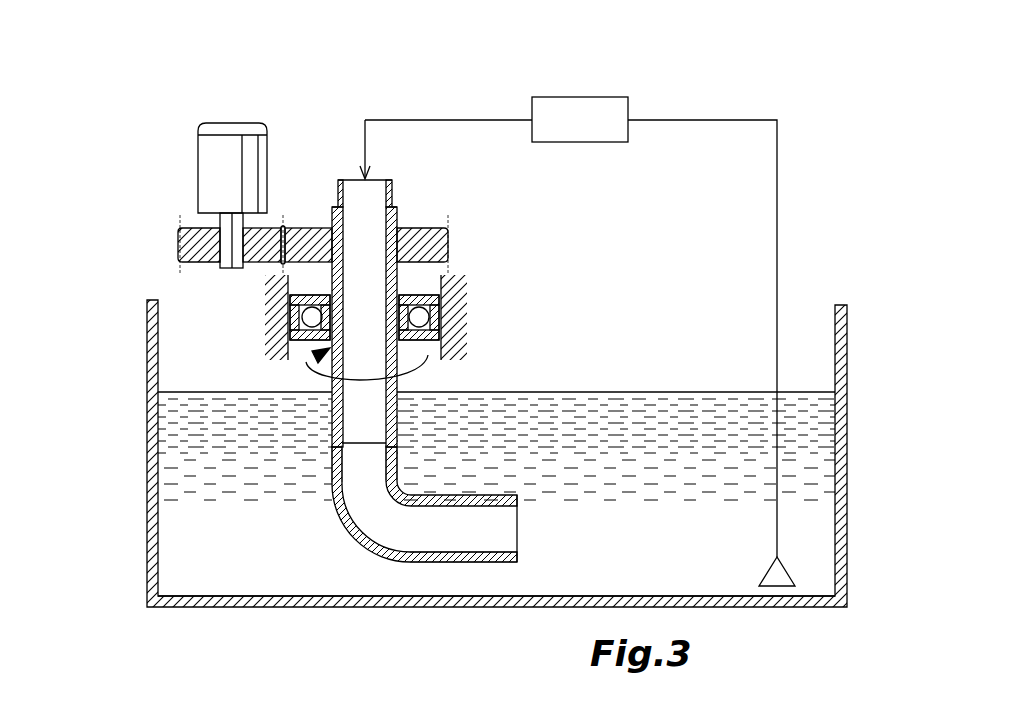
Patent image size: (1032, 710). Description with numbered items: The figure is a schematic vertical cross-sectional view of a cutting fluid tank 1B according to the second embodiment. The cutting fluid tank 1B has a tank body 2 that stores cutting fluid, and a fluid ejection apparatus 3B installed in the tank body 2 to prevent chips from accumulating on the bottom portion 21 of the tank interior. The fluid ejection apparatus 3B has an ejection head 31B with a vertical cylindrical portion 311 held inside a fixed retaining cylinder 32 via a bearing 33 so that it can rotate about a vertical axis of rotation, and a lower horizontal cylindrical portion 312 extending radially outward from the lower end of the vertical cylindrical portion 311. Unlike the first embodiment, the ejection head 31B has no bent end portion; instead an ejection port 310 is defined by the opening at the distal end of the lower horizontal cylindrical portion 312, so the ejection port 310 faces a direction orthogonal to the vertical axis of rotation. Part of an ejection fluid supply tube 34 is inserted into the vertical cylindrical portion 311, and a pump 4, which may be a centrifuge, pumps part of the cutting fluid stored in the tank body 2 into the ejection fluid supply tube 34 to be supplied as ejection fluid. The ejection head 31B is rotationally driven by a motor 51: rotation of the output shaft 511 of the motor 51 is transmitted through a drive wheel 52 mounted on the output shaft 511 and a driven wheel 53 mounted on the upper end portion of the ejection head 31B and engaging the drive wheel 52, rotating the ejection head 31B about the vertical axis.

The cutting fluid tank 1B is at (787, 140).
The tank body 2 is at (497, 491).
The bottom portion 21 is at (473, 607).
The fluid ejection apparatus 3B is at (479, 250).
The ejection head 31B is at (352, 532).
The ejection port 310 is at (518, 527).
The vertical cylindrical portion 311 is at (323, 445).
The lower horizontal cylindrical portion 312 is at (425, 566).
The fixed retaining cylinder 32 is at (463, 322).
The bearing 33 is at (290, 330).
The ejection fluid supply tube 34 is at (393, 193).
The pump 4 is at (613, 142).
The motor 51 is at (232, 136).
The output shaft 511 is at (228, 268).
The drive wheel 52 is at (195, 229).
The driven wheel 53 is at (312, 228).